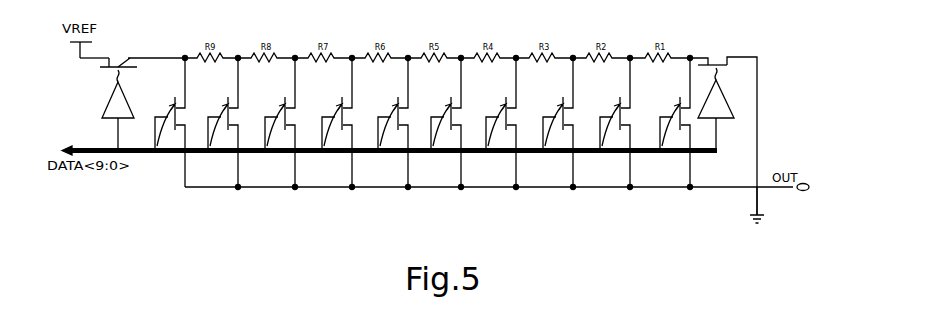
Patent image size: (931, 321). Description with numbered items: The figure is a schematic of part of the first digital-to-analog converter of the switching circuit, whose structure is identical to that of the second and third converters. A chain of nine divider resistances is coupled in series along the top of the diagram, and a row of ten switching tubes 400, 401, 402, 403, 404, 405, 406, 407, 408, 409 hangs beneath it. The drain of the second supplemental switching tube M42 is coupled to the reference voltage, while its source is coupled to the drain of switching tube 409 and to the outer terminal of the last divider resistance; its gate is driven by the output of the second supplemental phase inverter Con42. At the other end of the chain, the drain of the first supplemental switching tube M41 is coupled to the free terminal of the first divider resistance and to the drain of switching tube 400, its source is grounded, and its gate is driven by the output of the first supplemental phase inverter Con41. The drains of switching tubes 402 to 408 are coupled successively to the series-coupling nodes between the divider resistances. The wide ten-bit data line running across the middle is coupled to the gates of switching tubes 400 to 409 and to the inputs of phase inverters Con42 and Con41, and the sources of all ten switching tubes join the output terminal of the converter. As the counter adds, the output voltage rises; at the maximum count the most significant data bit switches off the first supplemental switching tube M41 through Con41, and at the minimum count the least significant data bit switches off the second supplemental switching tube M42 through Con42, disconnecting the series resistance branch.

The switching tube 400 is at (668, 153).
The switching tube 401 is at (608, 153).
The switching tube 402 is at (551, 153).
The switching tube 403 is at (494, 153).
The switching tube 404 is at (439, 153).
The switching tube 405 is at (386, 153).
The switching tube 406 is at (330, 153).
The switching tube 407 is at (273, 153).
The switching tube 408 is at (216, 153).
The switching tube 409 is at (163, 153).
The first supplemental switching tube M41 is at (738, 63).
The second supplemental switching tube M42 is at (137, 57).
The first supplemental phase inverter Con41 is at (728, 103).
The second supplemental phase inverter Con42 is at (105, 107).